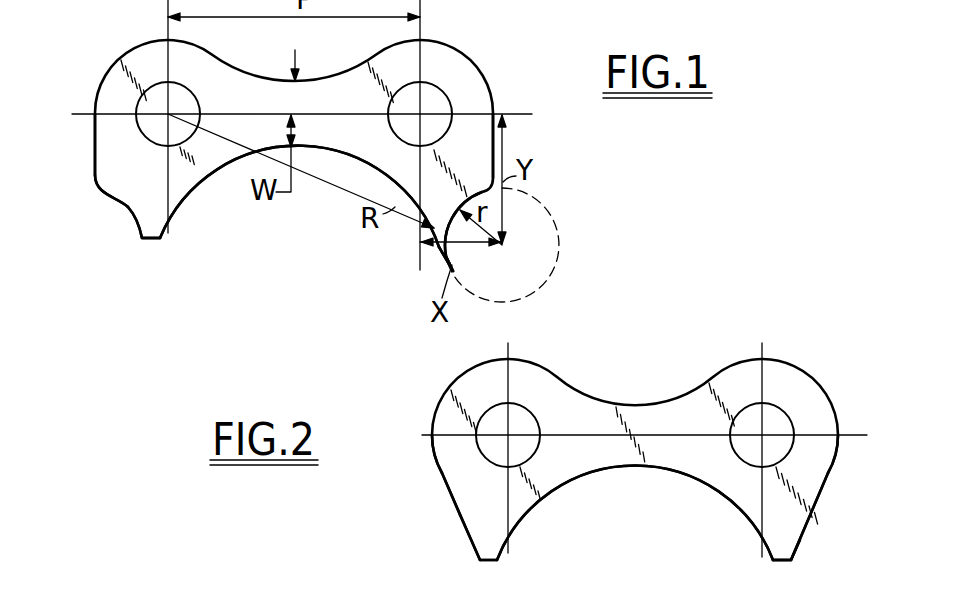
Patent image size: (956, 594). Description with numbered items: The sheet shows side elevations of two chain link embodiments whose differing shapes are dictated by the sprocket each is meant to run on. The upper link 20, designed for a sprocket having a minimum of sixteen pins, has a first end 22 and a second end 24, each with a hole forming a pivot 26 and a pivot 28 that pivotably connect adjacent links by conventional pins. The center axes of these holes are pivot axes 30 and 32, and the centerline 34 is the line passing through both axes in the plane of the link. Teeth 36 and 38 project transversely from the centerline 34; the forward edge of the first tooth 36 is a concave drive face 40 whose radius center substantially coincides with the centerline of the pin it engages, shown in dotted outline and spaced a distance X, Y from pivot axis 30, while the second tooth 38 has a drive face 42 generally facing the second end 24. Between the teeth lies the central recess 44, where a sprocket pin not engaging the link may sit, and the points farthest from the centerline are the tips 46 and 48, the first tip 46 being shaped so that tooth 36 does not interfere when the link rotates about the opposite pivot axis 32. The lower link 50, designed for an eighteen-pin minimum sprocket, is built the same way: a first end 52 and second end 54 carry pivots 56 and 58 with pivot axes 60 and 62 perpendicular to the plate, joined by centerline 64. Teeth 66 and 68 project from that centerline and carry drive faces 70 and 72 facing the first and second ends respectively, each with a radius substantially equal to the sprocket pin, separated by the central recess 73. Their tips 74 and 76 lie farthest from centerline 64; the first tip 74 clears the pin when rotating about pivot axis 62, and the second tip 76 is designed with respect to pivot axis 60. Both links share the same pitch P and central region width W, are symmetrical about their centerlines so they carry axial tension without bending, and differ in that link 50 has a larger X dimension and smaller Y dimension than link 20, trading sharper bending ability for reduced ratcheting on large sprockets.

In FIG. 1, the link 20 is at (478, 68).
In FIG. 1, the first end 22 is at (495, 143).
In FIG. 1, the second end 24 is at (95, 140).
In FIG. 1, the pivot 26 is at (433, 88).
In FIG. 1, the pivot 28 is at (148, 88).
In FIG. 1, the pivot axis 30 is at (420, 114).
In FIG. 1, the pivot axis 32 is at (168, 114).
In FIG. 1, the centerline 34 is at (532, 114).
In FIG. 1, the first tooth 36 is at (432, 240).
In FIG. 1, the second tooth 38 is at (165, 239).
In FIG. 1, the drive face 40 is at (466, 252).
In FIG. 1, the drive face 42 is at (122, 205).
In FIG. 1, the central recess 44 is at (338, 160).
In FIG. 1, the first tip 46 is at (446, 257).
In FIG. 1, the second tip 48 is at (147, 241).
In FIG. 2, the link 50 is at (814, 378).
In FIG. 2, the first end 52 is at (838, 460).
In FIG. 2, the second end 54 is at (432, 435).
In FIG. 2, the pivot 56 is at (776, 405).
In FIG. 2, the pivot 58 is at (492, 415).
In FIG. 2, the pivot axis 60 is at (762, 435).
In FIG. 2, the pivot axis 62 is at (508, 435).
In FIG. 2, the centerline 64 is at (855, 435).
In FIG. 2, the first tooth 66 is at (790, 523).
In FIG. 2, the second tooth 68 is at (483, 520).
In FIG. 2, the drive face 70 is at (818, 512).
In FIG. 2, the drive face 72 is at (452, 508).
In FIG. 2, the central recess 73 is at (655, 470).
In FIG. 2, the first tip 74 is at (792, 563).
In FIG. 2, the second tip 76 is at (488, 563).